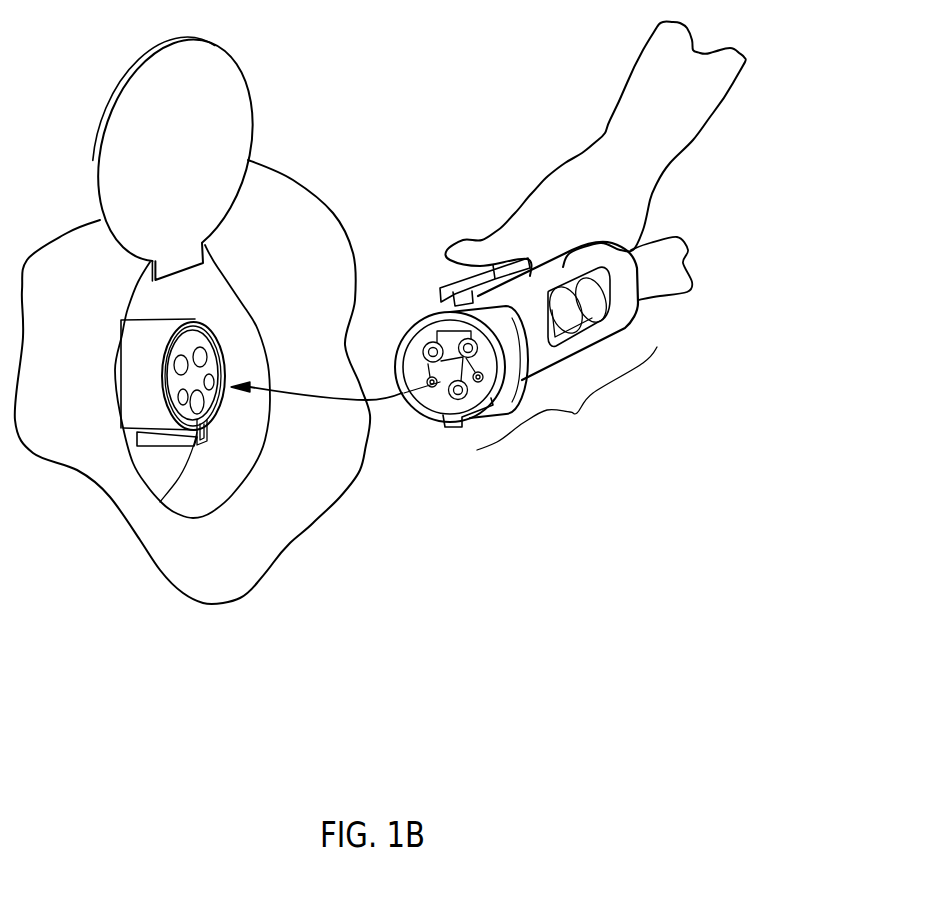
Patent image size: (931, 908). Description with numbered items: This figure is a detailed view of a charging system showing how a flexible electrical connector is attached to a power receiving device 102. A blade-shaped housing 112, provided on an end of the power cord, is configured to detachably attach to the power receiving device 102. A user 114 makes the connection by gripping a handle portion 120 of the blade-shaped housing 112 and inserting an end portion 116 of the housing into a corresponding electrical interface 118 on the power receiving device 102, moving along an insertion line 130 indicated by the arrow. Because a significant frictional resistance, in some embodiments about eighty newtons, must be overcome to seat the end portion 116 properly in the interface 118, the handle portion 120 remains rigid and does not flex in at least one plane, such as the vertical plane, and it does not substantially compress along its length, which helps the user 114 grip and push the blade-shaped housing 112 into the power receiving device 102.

The power receiving device 102 is at (293, 203).
The blade-shaped housing 112 is at (577, 413).
The user 114 is at (595, 178).
The end portion 116 is at (497, 392).
The electrical interface 118 is at (214, 405).
The handle portion 120 is at (620, 308).
The insertion line 130 is at (373, 400).